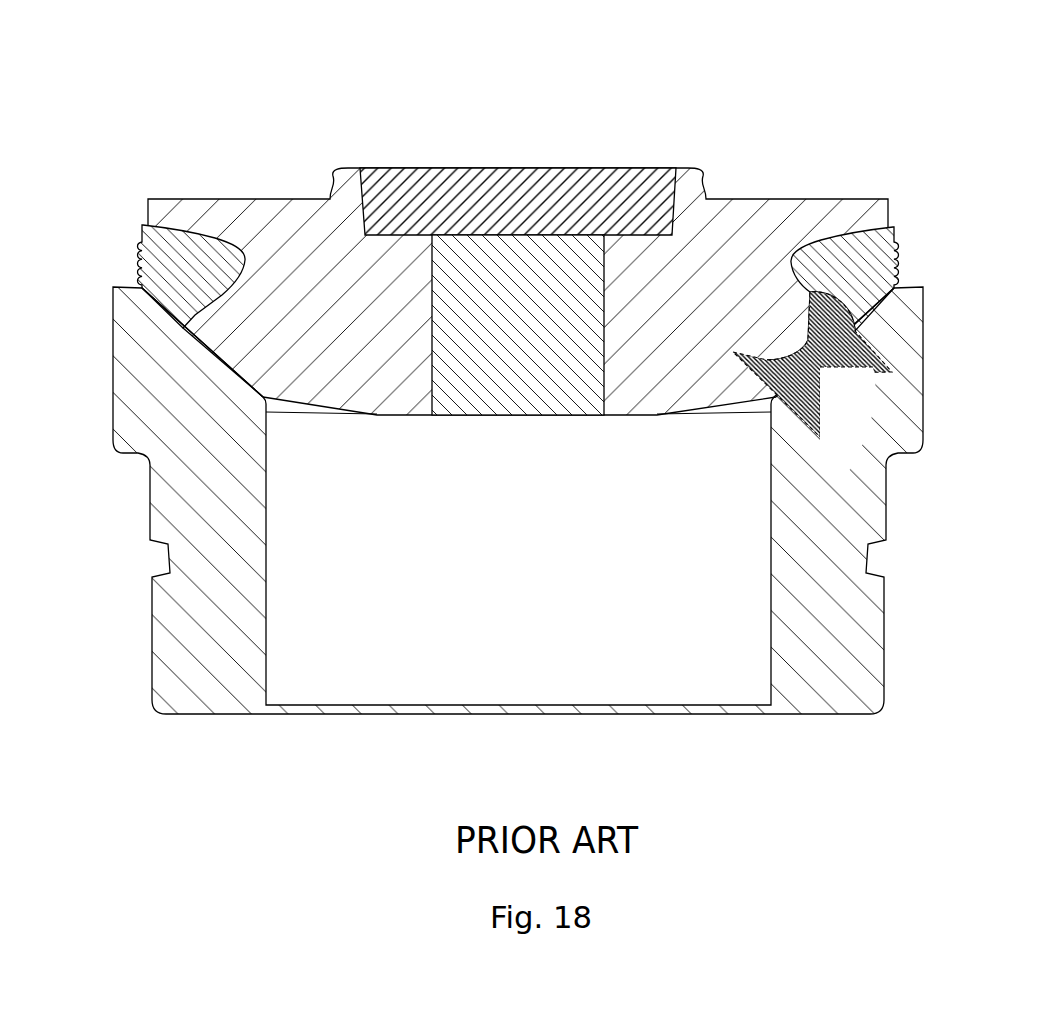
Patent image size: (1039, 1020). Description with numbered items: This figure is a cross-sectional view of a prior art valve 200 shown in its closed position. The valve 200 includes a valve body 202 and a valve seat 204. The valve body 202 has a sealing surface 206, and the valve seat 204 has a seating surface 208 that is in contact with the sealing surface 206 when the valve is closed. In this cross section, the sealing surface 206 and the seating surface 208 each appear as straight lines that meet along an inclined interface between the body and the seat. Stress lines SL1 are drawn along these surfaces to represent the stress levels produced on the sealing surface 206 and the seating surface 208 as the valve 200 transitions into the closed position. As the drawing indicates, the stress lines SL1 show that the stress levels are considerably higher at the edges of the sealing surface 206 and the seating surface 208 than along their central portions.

The prior art valve 200 is at (957, 117).
The valve body 202 is at (250, 196).
The valve seat 204 is at (110, 373).
The sealing surface 206 is at (243, 373).
The seating surface 208 is at (223, 367).
The stress lines SL1 is at (768, 360).